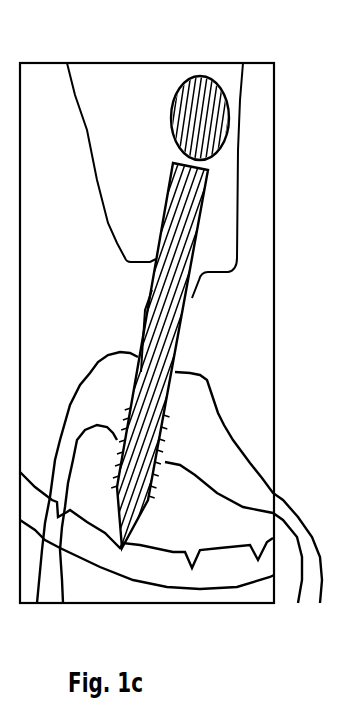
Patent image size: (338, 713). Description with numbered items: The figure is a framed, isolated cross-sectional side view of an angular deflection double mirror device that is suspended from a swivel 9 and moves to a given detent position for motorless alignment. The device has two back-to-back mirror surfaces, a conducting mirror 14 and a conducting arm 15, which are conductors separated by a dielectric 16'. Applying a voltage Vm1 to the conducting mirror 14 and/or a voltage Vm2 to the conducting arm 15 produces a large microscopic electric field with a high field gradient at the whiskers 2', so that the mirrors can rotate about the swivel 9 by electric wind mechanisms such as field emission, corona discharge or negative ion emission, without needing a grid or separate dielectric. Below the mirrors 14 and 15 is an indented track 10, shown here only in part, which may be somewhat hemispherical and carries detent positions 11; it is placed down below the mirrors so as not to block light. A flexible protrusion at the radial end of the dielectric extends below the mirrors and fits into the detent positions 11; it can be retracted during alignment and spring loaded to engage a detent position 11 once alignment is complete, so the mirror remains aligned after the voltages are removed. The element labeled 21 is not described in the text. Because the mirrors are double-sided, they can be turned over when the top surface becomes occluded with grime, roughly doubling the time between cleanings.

The swivel 9 is at (193, 117).
The dielectric 16' is at (146, 278).
The voltage applied to conducting mirror Vm1 is at (67, 63).
The voltage applied to conducting arm Vm2 is at (243, 63).
The conducting mirror 14 is at (37, 603).
The inner contour of the femur (medullary canal) 21 is at (63, 603).
The detent positions 11 is at (191, 558).
The indented track 10 is at (245, 565).
The conducting arm 15 is at (320, 603).
The whiskers 2' is at (234, 567).